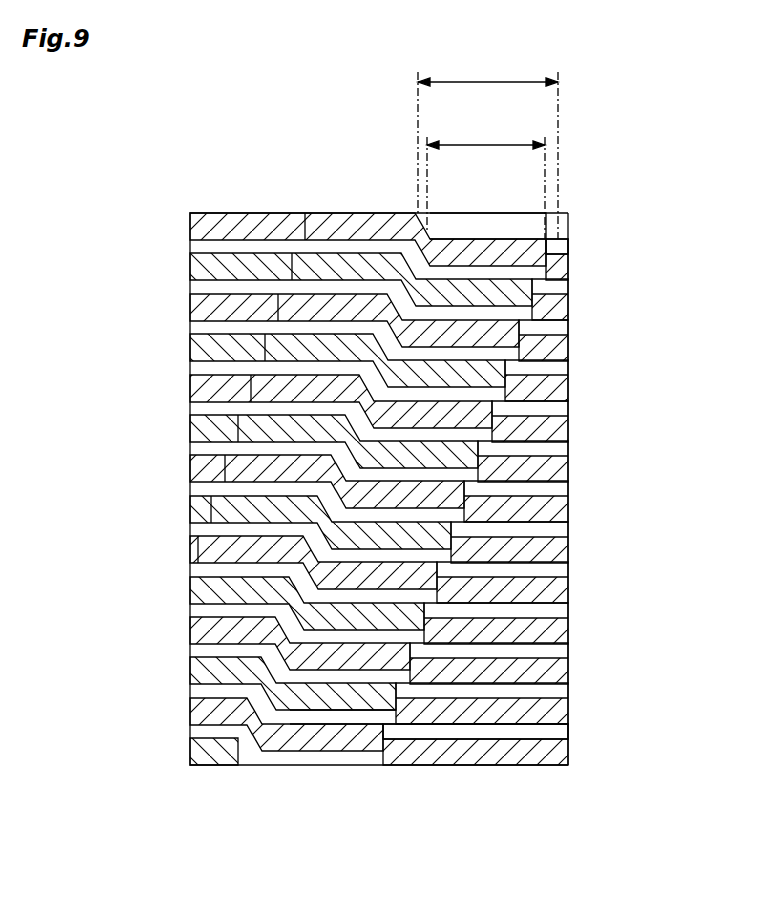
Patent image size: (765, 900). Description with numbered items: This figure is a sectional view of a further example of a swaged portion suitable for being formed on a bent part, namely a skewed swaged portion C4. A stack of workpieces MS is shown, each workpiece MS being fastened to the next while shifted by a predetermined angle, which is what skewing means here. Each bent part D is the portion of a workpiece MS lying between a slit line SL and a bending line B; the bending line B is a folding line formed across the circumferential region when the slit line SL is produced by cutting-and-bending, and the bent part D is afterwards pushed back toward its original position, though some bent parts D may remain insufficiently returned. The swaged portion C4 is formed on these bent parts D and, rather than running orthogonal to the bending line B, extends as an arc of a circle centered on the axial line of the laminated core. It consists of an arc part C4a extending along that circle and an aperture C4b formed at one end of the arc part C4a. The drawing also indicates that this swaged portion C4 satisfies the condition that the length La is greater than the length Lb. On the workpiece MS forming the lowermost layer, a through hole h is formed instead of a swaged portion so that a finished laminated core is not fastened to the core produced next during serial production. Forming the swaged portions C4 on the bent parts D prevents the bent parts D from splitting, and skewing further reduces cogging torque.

The bent part D is at (328, 266).
The slit line SL is at (291, 254).
The bending line B is at (550, 430).
The swaged portion C4 is at (502, 502).
The arc part C4a is at (510, 224).
The aperture C4b is at (547, 240).
The workpiece MS is at (566, 241).
The through hole h is at (238, 753).
The length La is at (487, 82).
The length Lb is at (483, 145).